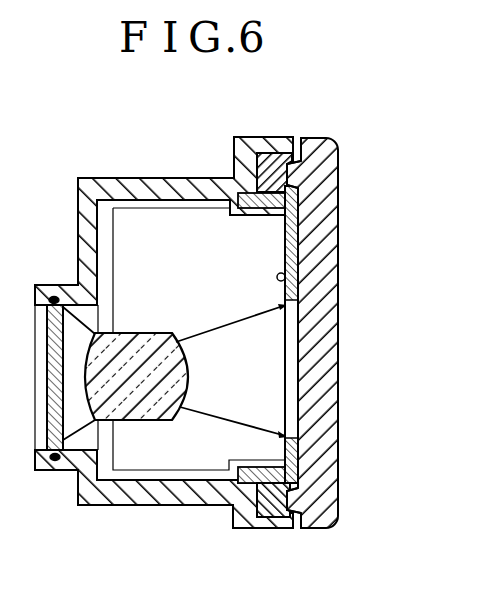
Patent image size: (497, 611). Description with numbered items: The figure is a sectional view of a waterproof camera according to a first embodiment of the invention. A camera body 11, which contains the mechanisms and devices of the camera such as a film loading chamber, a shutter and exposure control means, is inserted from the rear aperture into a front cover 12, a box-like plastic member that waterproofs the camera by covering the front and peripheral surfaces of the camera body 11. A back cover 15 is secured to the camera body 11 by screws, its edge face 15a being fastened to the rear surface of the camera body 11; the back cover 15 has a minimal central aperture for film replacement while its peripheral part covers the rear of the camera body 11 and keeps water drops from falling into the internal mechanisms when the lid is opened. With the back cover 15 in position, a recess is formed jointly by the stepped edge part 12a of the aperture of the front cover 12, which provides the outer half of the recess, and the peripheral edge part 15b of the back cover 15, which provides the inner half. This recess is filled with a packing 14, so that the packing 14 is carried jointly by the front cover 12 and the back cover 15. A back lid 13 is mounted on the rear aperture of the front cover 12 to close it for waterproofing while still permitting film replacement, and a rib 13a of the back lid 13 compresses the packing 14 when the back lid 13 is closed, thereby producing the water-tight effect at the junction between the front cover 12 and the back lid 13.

The camera body 11 is at (163, 222).
The front cover 12 is at (106, 184).
The edge part of the aperture of the front cover 12a is at (258, 143).
The back lid 13 is at (327, 137).
The rib 13a is at (291, 176).
The packing 14 is at (272, 155).
The back cover 15 is at (290, 258).
The edge face of the back cover 15a is at (285, 282).
The peripheral edge part of the back cover 15b is at (291, 203).